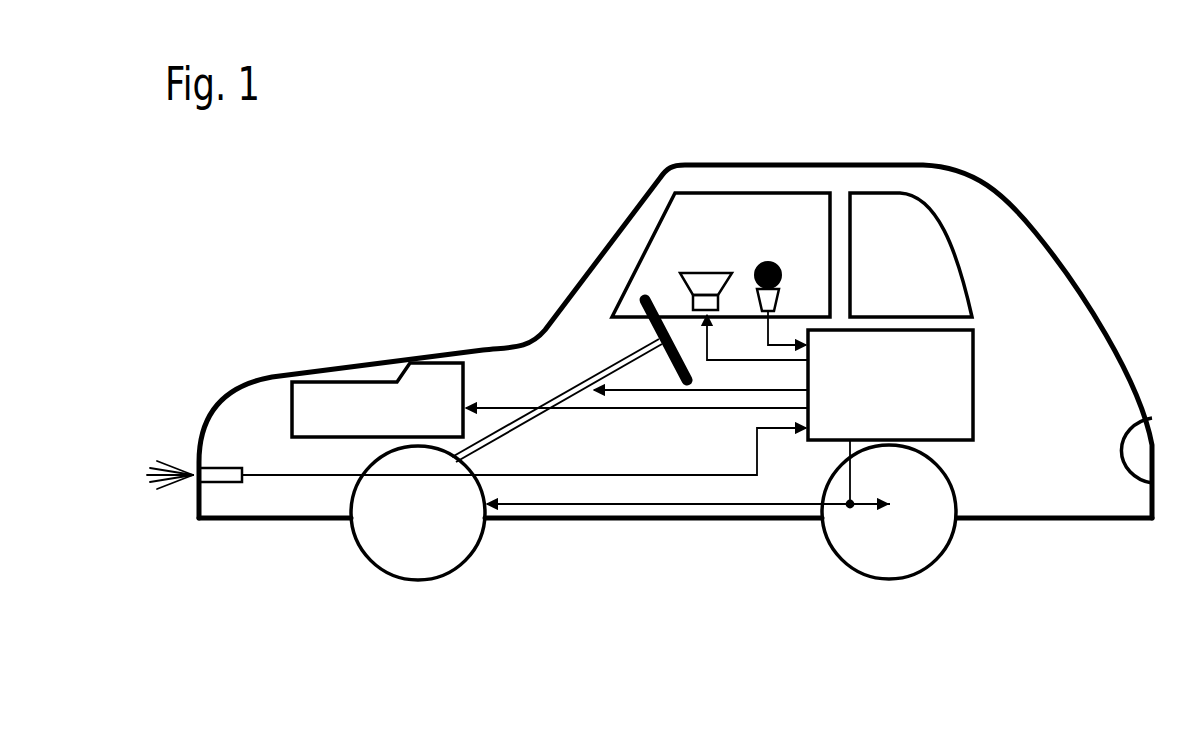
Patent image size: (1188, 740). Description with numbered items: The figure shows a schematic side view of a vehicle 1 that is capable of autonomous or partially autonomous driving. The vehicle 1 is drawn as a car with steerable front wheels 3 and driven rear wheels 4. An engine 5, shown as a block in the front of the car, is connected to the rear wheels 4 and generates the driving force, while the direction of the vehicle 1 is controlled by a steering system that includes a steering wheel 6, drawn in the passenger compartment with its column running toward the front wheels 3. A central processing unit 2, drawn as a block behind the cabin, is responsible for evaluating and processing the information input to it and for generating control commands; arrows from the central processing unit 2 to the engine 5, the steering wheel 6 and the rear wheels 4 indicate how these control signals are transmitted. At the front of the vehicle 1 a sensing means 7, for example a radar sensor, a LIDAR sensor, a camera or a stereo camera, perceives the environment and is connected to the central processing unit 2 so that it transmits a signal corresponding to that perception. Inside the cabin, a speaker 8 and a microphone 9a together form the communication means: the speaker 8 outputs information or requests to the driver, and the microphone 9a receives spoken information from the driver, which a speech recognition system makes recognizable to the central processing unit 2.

The vehicle 1 is at (386, 238).
The central processing unit 2 is at (974, 370).
The front wheels 3 is at (418, 563).
The rear wheels 4 is at (890, 563).
The engine 5 is at (320, 398).
The steering wheel 6 is at (647, 333).
The sensing means 7 is at (226, 483).
The speaker 8 is at (705, 283).
The microphone 9a is at (768, 272).